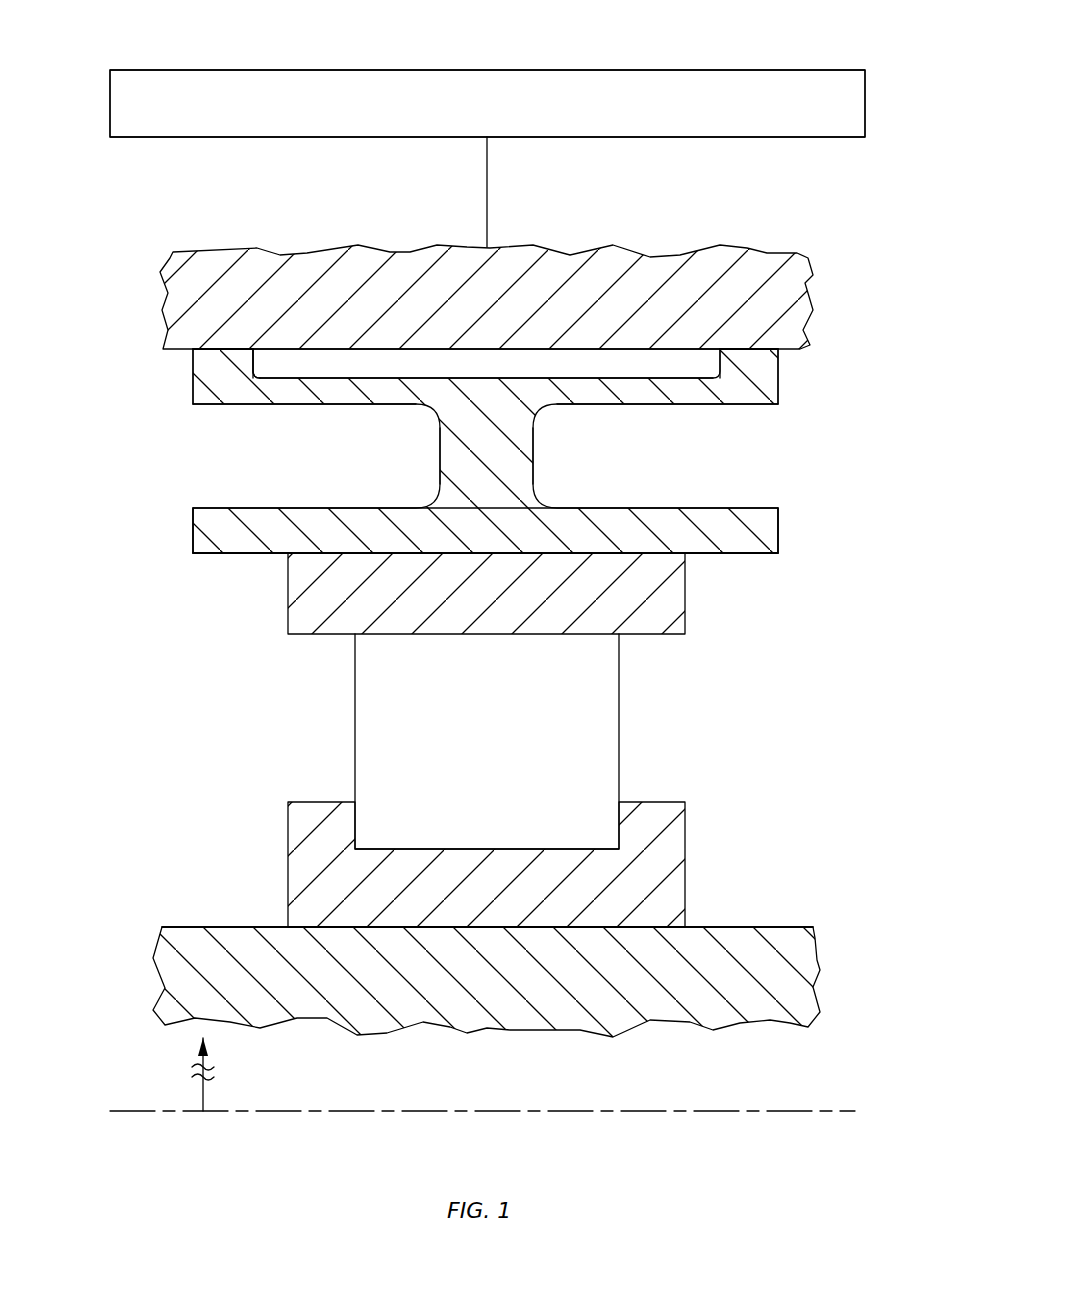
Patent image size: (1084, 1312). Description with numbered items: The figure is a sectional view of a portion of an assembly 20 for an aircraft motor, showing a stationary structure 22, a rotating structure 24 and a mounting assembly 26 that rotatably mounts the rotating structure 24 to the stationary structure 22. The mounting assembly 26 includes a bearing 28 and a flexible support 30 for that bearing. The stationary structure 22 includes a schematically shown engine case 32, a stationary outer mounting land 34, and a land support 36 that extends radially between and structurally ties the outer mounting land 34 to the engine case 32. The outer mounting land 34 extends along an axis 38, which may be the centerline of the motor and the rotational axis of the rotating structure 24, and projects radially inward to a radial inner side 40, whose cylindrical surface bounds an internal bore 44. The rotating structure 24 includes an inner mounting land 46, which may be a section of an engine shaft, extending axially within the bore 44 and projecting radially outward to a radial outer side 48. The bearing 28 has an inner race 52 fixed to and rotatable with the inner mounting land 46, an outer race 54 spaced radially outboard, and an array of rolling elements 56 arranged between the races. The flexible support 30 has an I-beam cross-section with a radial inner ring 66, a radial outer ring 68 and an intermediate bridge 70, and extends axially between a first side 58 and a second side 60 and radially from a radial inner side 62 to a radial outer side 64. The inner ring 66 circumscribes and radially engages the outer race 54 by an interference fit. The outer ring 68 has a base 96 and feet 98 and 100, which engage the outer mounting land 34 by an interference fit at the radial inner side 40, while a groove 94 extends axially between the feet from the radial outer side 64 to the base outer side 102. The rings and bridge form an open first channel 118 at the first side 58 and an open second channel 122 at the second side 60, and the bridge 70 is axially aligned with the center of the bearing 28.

The assembly 20 is at (893, 40).
The stationary structure 22 is at (126, 44).
The rotating structure 24 is at (146, 1004).
The mounting assembly 26 is at (120, 781).
The bearing 28 is at (760, 716).
The flexible support 30 is at (820, 432).
The engine case 32 is at (865, 103).
The outer mounting land 34 is at (810, 285).
The land support 36 is at (487, 205).
The axis 38 is at (161, 1113).
The radial inner side 40 is at (800, 352).
The internal bore 44 is at (146, 580).
The inner mounting land 46 is at (818, 970).
The radial outer side 48 is at (767, 927).
The bearing inner race 52 is at (686, 864).
The bearing outer race 54 is at (686, 592).
The bearing rolling elements 56 is at (620, 728).
The first side 58 is at (779, 527).
The second side 60 is at (193, 539).
The radial inner side 62 is at (250, 556).
The radial outer side 64 is at (230, 352).
The radial inner ring 66 is at (185, 501).
The radial outer ring 68 is at (184, 387).
The intermediate bridge 70 is at (436, 452).
The groove 94 is at (425, 366).
The base 96 is at (296, 393).
The foot 98 is at (750, 370).
The foot 100 is at (218, 372).
The outer side of the outer ring base 102 is at (307, 377).
The first channel 118 is at (662, 477).
The second channel 122 is at (293, 479).